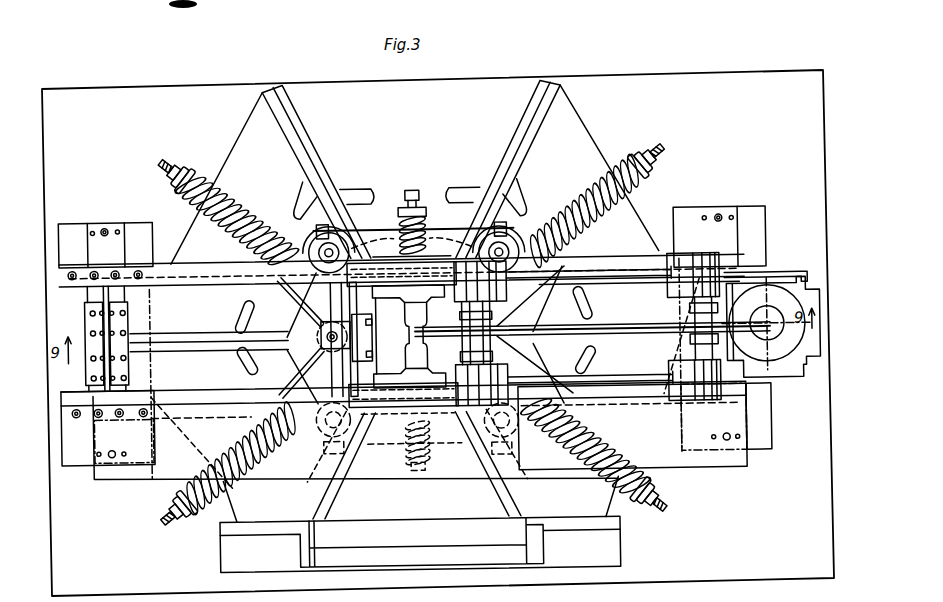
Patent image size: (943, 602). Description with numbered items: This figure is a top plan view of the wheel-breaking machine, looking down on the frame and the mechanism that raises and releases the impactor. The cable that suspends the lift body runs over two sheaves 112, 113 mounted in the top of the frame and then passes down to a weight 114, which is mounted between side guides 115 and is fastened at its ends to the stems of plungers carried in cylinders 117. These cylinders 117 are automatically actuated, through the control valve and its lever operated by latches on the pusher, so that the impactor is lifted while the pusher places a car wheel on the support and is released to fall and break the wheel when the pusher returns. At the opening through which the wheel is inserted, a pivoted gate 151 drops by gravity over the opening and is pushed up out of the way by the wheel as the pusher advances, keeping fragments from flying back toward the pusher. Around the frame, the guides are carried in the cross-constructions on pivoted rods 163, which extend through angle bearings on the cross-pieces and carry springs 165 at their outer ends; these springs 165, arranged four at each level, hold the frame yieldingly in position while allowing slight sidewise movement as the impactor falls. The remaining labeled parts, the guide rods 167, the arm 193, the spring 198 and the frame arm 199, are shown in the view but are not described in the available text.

The sheave 112 is at (425, 368).
The sheave 113 is at (644, 339).
The weight 114 is at (813, 373).
The side guides 115 is at (793, 277).
The cylinders 117 is at (768, 346).
The pivoted gate 151 is at (421, 527).
The pivoted rods 163 is at (651, 176).
The springs 165 is at (638, 206).
The guide rods 167 is at (608, 282).
The arm 193 is at (269, 297).
The spring 198 is at (407, 222).
The frame arm 199 is at (586, 151).